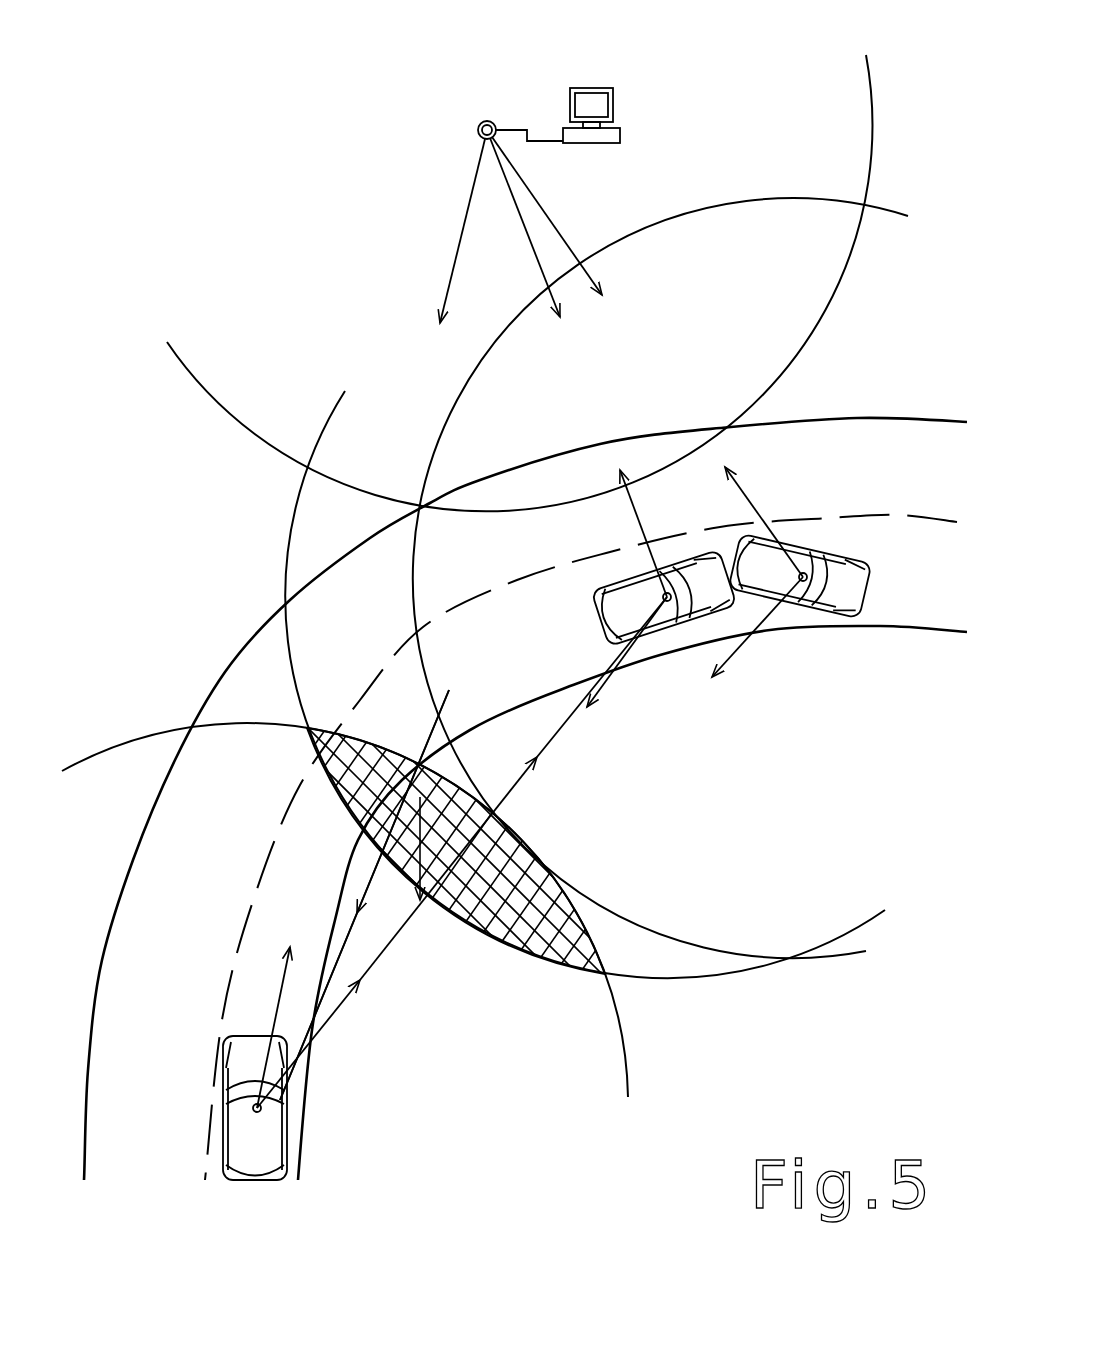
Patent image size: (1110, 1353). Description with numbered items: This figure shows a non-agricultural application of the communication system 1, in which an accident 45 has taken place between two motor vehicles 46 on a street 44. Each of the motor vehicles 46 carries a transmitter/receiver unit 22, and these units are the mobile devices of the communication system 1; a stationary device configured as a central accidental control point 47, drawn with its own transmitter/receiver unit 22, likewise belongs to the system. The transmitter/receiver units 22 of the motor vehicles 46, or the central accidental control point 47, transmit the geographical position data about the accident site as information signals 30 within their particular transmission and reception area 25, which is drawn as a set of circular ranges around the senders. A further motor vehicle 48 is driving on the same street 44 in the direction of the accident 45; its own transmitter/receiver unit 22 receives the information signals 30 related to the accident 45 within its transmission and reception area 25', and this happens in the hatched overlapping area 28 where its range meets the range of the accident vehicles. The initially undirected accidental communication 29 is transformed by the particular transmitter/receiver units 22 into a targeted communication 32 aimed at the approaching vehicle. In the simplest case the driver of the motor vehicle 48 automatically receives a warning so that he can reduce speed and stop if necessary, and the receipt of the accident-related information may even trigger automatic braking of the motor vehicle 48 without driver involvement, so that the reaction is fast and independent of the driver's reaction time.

The communication system 1 is at (592, 865).
The transmitter/receiver unit 22 is at (482, 122).
The transmission and reception area 25 is at (537, 516).
The transmission and reception area 25' is at (396, 910).
The overlapping area 28 is at (488, 932).
The accidental communication 29 is at (372, 883).
The information signal 30 is at (462, 232).
The targeted communication 32 is at (364, 895).
The street 44 is at (895, 468).
The accident 45 is at (708, 460).
The motor vehicle 46 is at (680, 568).
The central accidental control point 47 is at (622, 133).
The further motor vehicle 48 is at (232, 1142).